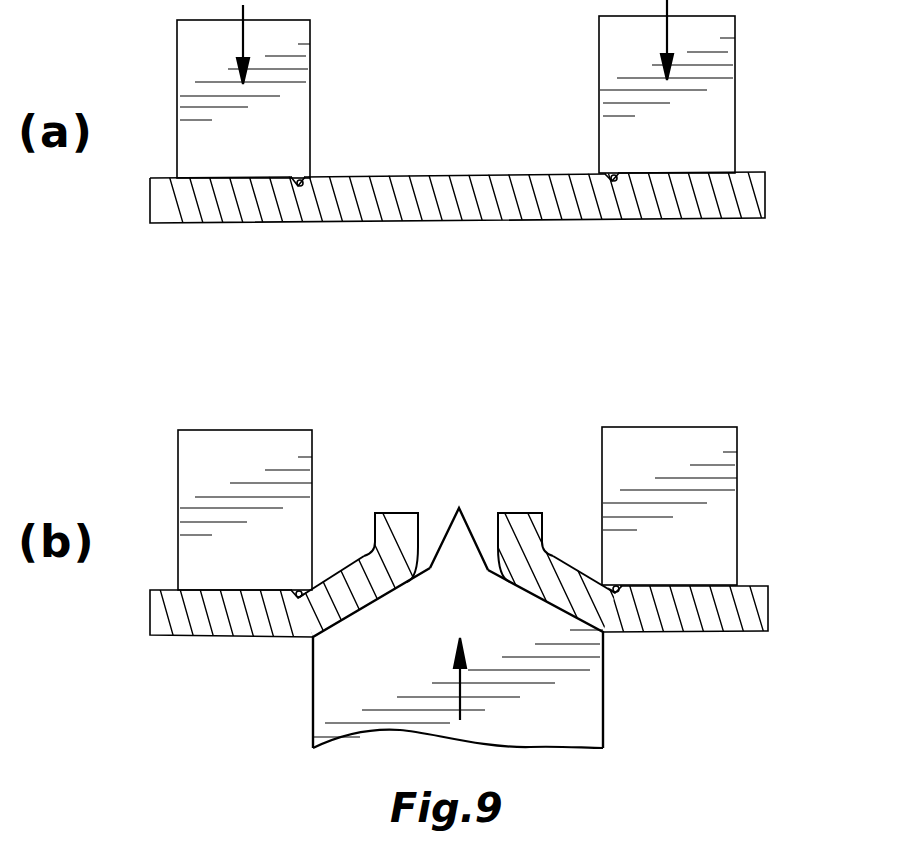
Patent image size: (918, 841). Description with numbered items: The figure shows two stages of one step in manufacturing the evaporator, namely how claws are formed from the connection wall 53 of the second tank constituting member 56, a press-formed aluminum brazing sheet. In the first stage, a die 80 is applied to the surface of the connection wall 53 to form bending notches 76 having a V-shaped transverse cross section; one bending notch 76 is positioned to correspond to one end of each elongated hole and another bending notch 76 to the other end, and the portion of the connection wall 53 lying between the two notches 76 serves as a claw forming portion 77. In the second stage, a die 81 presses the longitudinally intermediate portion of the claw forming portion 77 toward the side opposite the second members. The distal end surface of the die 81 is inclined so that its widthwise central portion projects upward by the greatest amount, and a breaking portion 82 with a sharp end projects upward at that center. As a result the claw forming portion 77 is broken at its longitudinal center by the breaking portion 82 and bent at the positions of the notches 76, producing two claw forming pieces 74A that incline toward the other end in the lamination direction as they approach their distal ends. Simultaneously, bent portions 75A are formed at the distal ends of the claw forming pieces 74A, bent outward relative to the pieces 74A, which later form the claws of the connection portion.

The connection wall 53 is at (160, 200).
The second tank constituting member 56 is at (465, 396).
The claw forming pieces 74A is at (345, 575).
The bent portions 75A is at (398, 515).
The bending notches 76 is at (299, 186).
The claw forming portion 77 is at (445, 185).
The die 80 is at (200, 70).
The die 81 is at (492, 571).
The breaking portion 82 is at (458, 505).